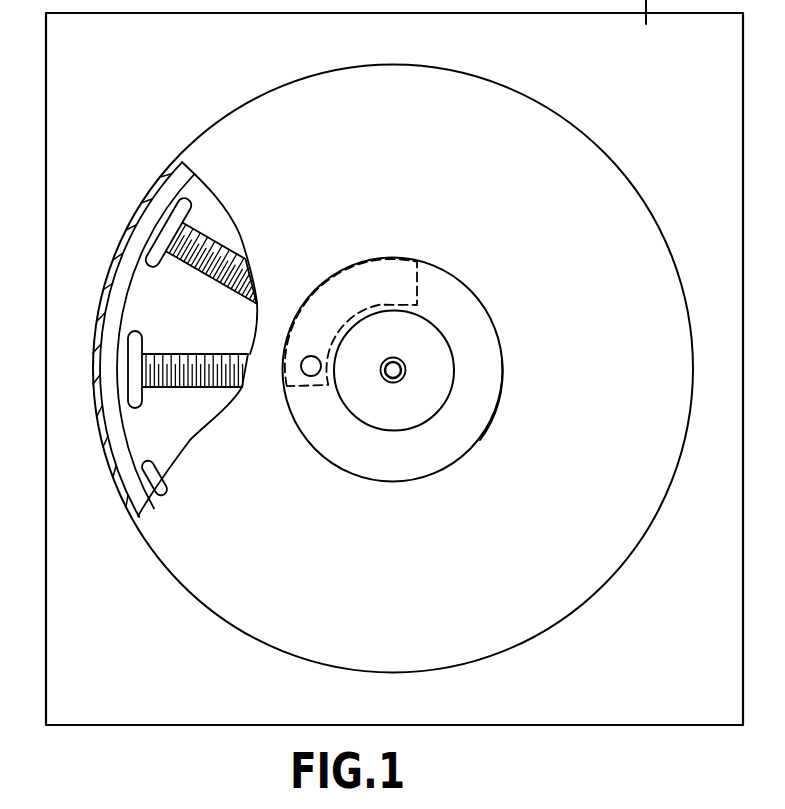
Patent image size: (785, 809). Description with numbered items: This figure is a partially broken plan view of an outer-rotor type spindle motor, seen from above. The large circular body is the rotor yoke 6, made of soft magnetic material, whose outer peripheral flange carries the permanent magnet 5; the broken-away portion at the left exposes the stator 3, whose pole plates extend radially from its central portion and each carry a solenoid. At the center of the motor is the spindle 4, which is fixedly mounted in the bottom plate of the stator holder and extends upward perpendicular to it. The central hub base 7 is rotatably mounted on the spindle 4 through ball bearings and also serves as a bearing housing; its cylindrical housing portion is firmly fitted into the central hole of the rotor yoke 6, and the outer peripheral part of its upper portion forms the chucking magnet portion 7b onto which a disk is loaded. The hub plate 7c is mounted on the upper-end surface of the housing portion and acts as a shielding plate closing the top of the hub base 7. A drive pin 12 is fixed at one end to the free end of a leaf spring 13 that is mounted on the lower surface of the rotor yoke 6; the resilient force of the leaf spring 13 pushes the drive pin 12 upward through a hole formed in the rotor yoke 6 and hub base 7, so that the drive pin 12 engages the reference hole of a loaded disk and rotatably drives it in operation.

The stator 3 is at (170, 350).
The spindle 4 is at (395, 378).
The permanent magnet 5 is at (114, 289).
The rotor yoke 6 is at (241, 118).
The hub base 7 is at (473, 292).
The chucking magnet portion 7b is at (495, 357).
The hub plate 7c is at (438, 402).
The drive pin 12 is at (310, 377).
The leaf spring 13 is at (367, 266).